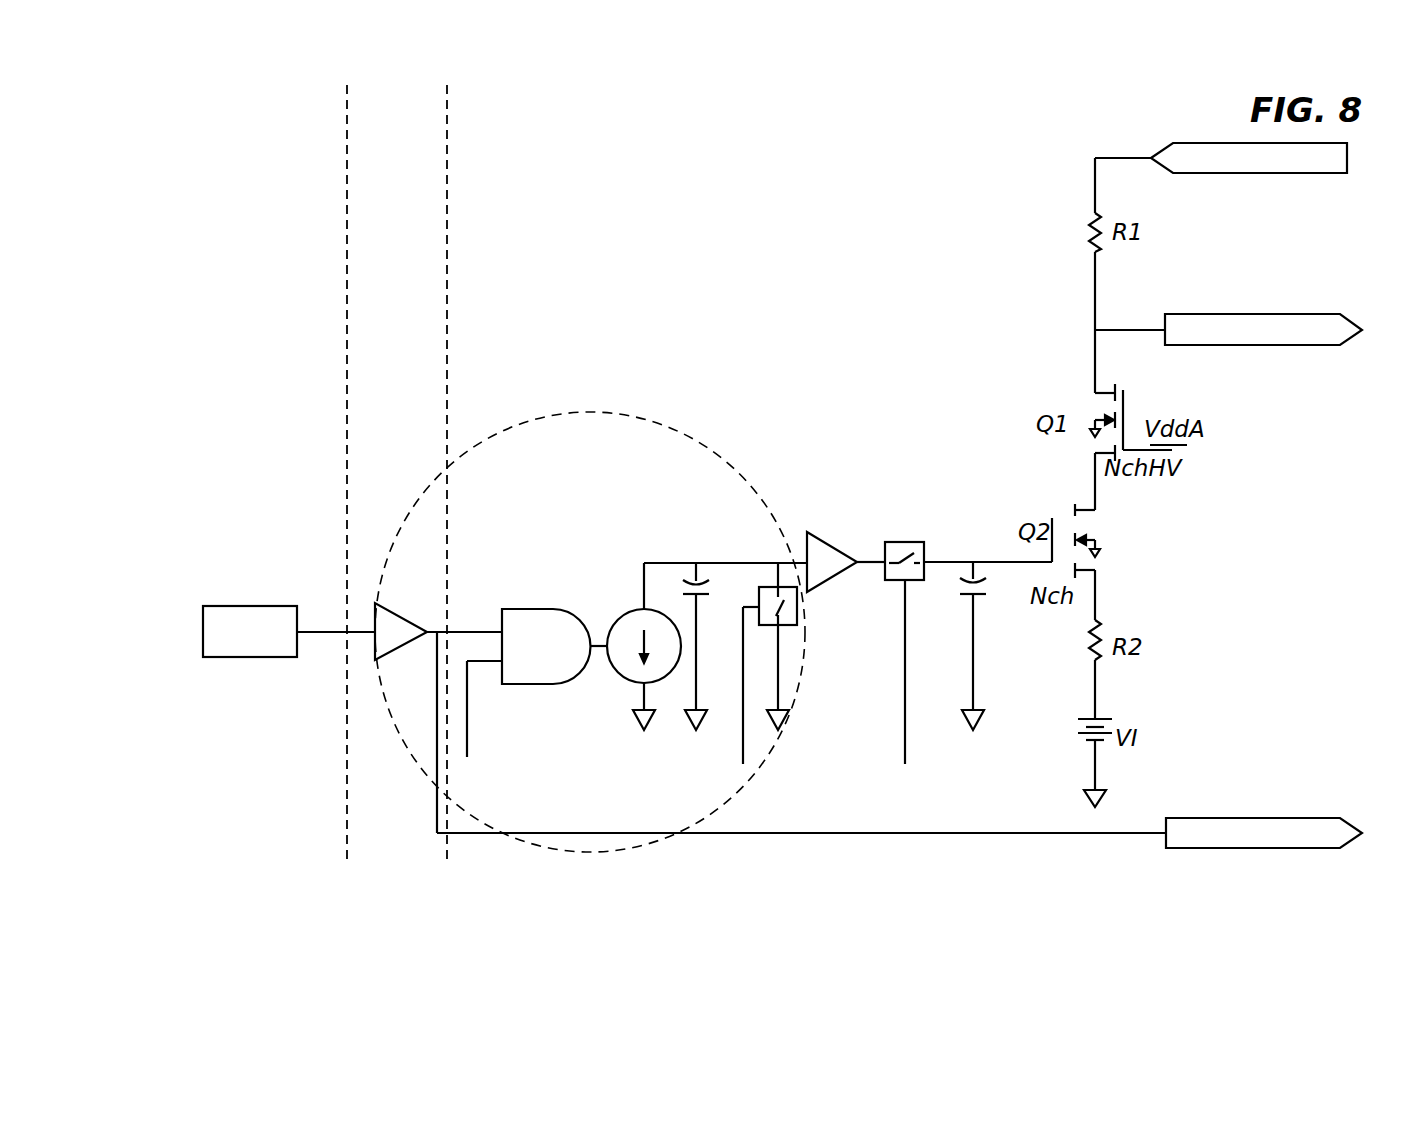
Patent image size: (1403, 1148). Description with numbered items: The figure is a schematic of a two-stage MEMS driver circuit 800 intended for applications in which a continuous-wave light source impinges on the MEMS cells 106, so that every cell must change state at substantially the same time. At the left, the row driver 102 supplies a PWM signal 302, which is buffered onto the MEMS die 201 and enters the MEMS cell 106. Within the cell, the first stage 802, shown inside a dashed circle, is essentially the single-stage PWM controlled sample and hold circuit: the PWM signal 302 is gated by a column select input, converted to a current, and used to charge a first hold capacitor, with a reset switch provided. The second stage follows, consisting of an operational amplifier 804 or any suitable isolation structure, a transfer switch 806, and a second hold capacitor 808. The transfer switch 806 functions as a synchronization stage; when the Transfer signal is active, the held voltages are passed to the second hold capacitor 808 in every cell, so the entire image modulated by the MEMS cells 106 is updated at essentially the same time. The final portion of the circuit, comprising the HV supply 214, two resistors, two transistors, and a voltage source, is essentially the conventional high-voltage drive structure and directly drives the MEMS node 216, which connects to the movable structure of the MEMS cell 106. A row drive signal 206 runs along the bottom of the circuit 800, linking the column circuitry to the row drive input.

The row driver 102 is at (270, 187).
The MEMS die 201 is at (417, 205).
The MEMS cell 106 is at (801, 186).
The PWM signal 302 is at (252, 658).
The first stage 802 is at (707, 447).
The operational amplifier OP 804 is at (834, 543).
The transfer switch 806 is at (915, 542).
The second hold capacitor C2 808 is at (968, 600).
The high-voltage supply 214 is at (1316, 174).
The MEMS node 216 is at (1308, 346).
The row drive signal 206 is at (1253, 818).
The two-stage MEMS driver circuit 800 is at (298, 858).